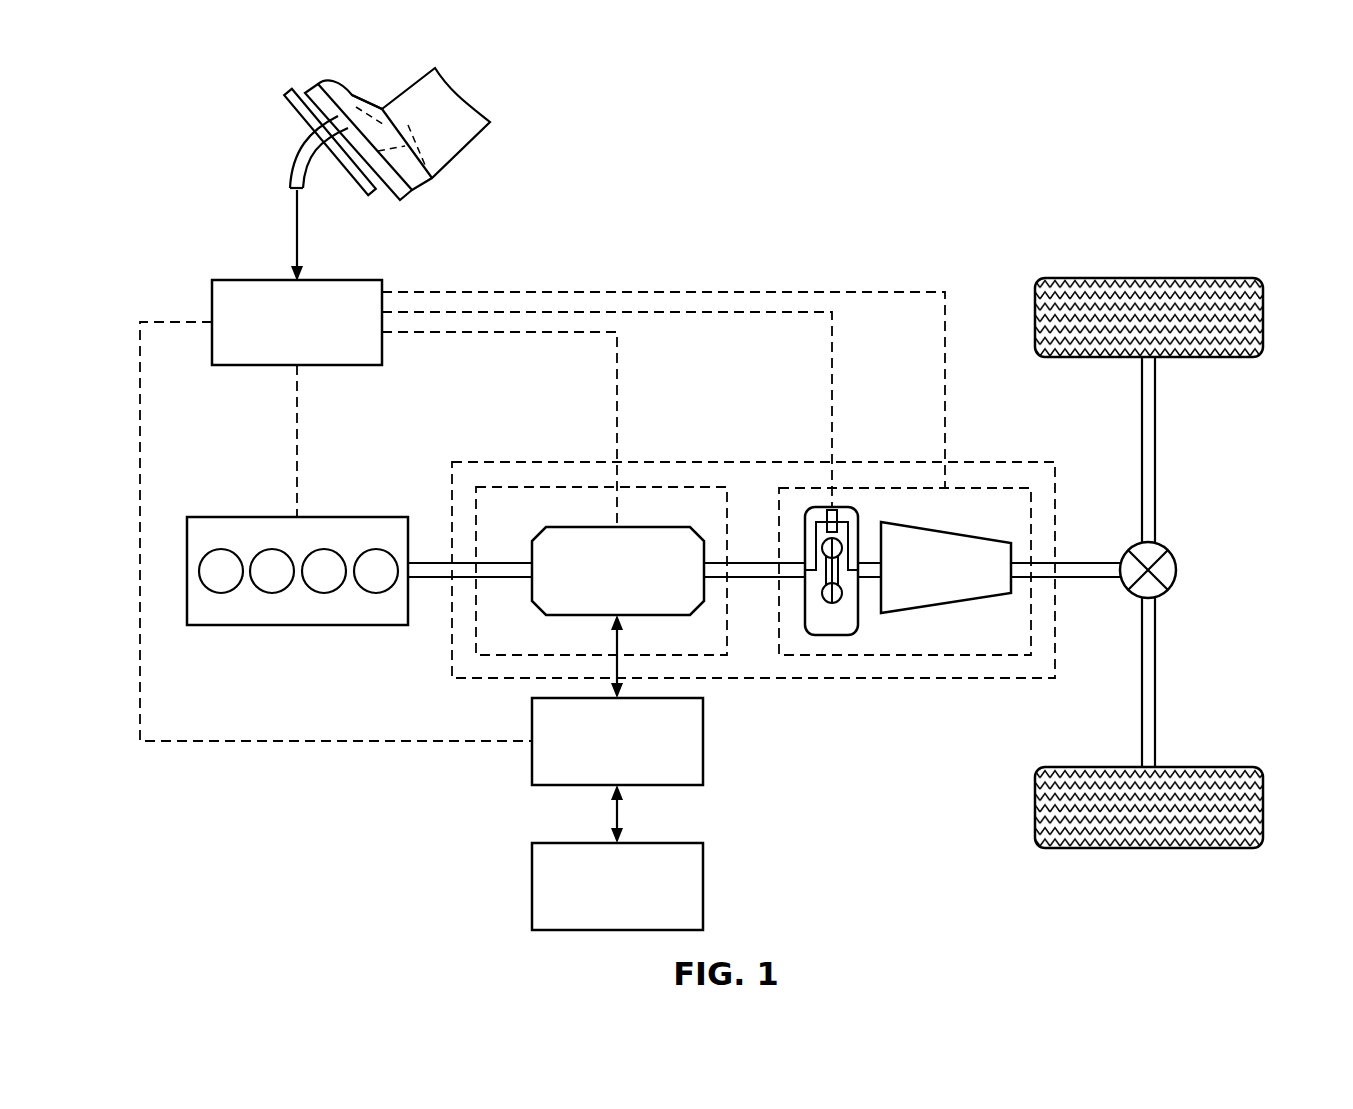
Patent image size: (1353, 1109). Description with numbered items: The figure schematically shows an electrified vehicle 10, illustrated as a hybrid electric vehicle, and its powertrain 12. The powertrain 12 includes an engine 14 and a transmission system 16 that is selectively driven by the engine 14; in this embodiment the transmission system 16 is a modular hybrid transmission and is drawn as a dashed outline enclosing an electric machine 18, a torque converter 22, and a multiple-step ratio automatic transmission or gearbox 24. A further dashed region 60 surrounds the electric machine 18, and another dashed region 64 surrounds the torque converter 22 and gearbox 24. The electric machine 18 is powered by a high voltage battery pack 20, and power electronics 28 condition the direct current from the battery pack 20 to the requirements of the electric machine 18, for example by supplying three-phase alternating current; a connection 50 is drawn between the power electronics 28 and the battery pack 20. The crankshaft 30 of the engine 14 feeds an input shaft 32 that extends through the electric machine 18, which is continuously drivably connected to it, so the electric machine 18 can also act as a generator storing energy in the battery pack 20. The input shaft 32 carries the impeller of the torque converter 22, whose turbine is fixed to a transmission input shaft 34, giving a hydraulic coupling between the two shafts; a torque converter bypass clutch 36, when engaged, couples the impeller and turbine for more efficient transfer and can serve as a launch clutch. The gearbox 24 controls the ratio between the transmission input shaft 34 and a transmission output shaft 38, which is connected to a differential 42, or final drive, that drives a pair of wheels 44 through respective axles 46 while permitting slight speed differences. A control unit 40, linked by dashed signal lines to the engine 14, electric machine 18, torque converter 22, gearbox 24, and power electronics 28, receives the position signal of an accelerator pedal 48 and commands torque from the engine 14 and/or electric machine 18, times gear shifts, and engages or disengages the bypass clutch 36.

The electrified vehicle 10 is at (1068, 143).
The powertrain 12 is at (372, 781).
The engine 14 is at (238, 516).
The transmission system 16 is at (730, 461).
The electric machine 18 is at (655, 527).
The high voltage battery pack 20 is at (585, 931).
The torque converter 22 is at (830, 636).
The transmission gearbox 24 is at (935, 606).
The power electronics 28 is at (652, 786).
The crankshaft 30 is at (440, 562).
The input shaft 32 is at (744, 562).
The transmission input shaft 34 is at (864, 562).
The torque converter bypass clutch 36 is at (836, 509).
The transmission output shaft 38 is at (1087, 561).
The control unit 40 is at (266, 279).
The differential 42 is at (1177, 568).
The wheels 44 is at (1150, 278).
The axles 46 is at (1157, 445).
The accelerator pedal 48 is at (293, 113).
The electrical connection 50 is at (615, 820).
The electric drive subsystem 60 is at (545, 486).
The transmission assembly 64 is at (1010, 487).